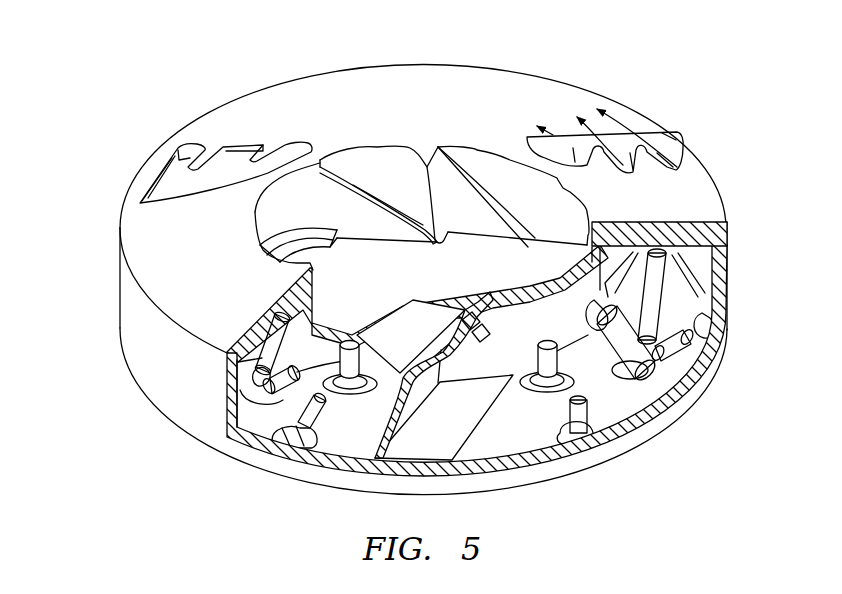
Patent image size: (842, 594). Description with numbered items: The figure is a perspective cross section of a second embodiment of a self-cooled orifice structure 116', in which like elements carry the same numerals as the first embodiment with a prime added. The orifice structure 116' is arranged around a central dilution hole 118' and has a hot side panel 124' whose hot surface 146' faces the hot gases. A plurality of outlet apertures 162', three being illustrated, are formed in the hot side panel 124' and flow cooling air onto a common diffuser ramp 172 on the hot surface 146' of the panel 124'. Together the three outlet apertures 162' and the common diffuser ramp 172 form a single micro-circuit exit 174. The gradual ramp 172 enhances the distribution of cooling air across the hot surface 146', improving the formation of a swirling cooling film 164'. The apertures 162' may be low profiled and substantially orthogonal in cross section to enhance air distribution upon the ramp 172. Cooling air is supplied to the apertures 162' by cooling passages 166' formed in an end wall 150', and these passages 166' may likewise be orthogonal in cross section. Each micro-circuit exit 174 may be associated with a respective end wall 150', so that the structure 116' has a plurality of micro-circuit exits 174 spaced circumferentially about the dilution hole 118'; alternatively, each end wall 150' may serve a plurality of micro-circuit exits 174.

The orifice structure 116' is at (384, 135).
The dilution hole 118' is at (454, 213).
The hot side panel 124' is at (400, 330).
The hot surface 146' is at (253, 146).
The end wall 150' is at (455, 376).
The outlet apertures 162' is at (226, 124).
The cooling film 164' is at (605, 104).
The cooling passages 166' is at (451, 352).
The common diffuser ramp 172 is at (203, 181).
The micro-circuit exit 174 is at (166, 206).